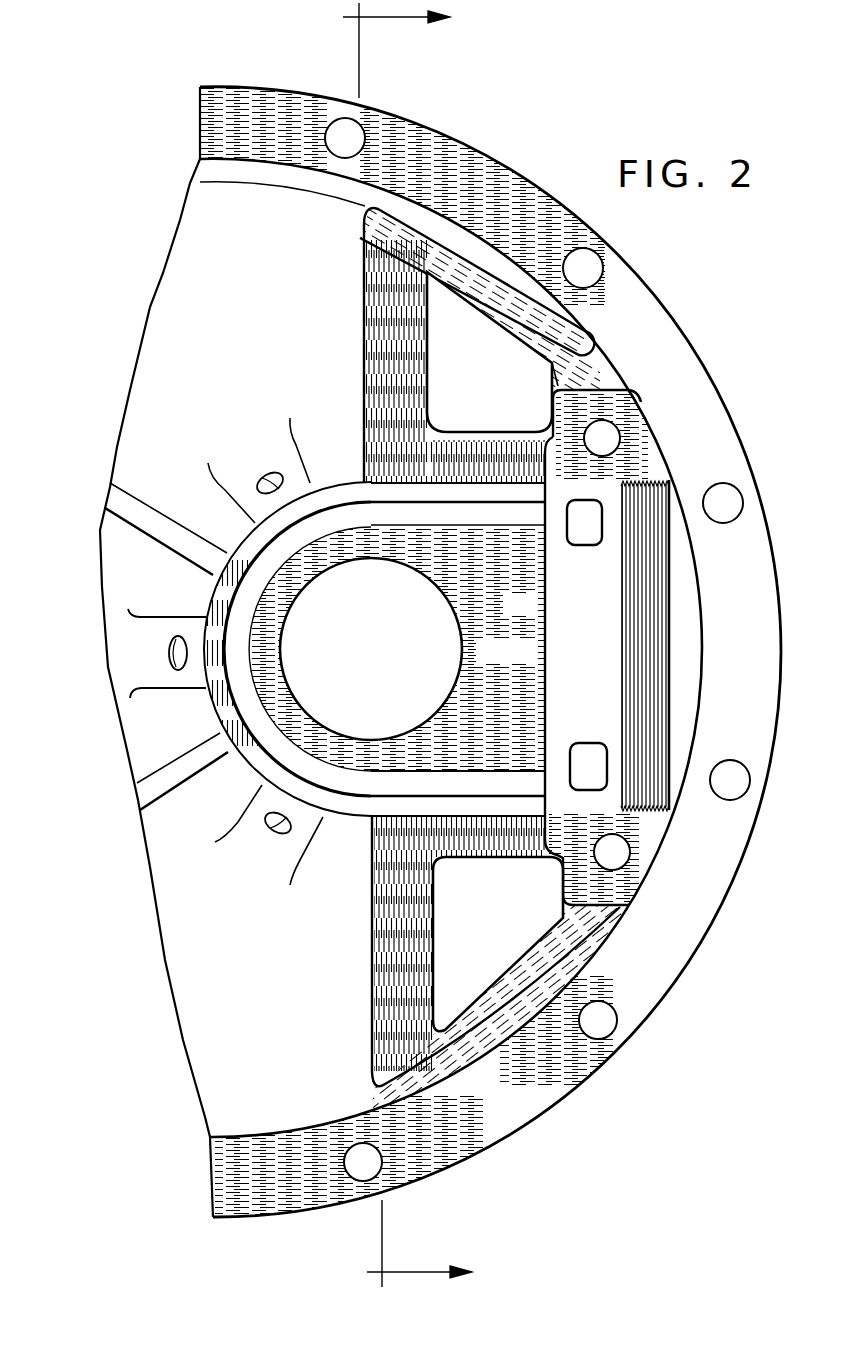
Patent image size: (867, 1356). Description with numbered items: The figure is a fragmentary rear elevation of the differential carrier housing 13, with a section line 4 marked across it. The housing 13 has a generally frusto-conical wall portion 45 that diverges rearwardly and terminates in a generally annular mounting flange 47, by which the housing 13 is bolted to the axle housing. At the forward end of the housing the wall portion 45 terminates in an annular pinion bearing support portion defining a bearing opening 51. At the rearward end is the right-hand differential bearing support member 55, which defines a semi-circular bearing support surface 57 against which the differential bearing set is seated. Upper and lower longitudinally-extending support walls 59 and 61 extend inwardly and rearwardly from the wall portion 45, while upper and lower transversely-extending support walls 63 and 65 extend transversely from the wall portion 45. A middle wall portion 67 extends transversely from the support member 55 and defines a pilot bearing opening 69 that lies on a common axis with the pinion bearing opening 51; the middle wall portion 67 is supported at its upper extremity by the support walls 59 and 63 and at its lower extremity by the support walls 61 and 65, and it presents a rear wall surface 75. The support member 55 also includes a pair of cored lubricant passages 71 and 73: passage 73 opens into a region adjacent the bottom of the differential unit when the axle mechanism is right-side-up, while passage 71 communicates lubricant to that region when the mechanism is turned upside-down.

The section line 4- 4 is at (399, 645).
The differential carrier housing 13 is at (119, 369).
The frusto-conical wall portion 45 is at (160, 437).
The mounting flange 47 is at (680, 398).
The bearing opening 51 is at (272, 545).
The right-hand differential bearing support member 55 is at (674, 650).
The semi-circular bearing support surface 57 is at (578, 620).
The upper longitudinally-extending support wall 59 is at (363, 358).
The lower longitudinally-extending support wall 61 is at (370, 975).
The upper transversely-extending support wall 63 is at (440, 455).
The lower transversely-extending support wall 65 is at (434, 885).
The middle wall portion 67 is at (457, 728).
The pilot bearing opening 69 is at (283, 678).
The cored lubricant passage 71 is at (582, 540).
The cored lubricant passage 73 is at (588, 757).
The rear wall surface 75 is at (397, 648).